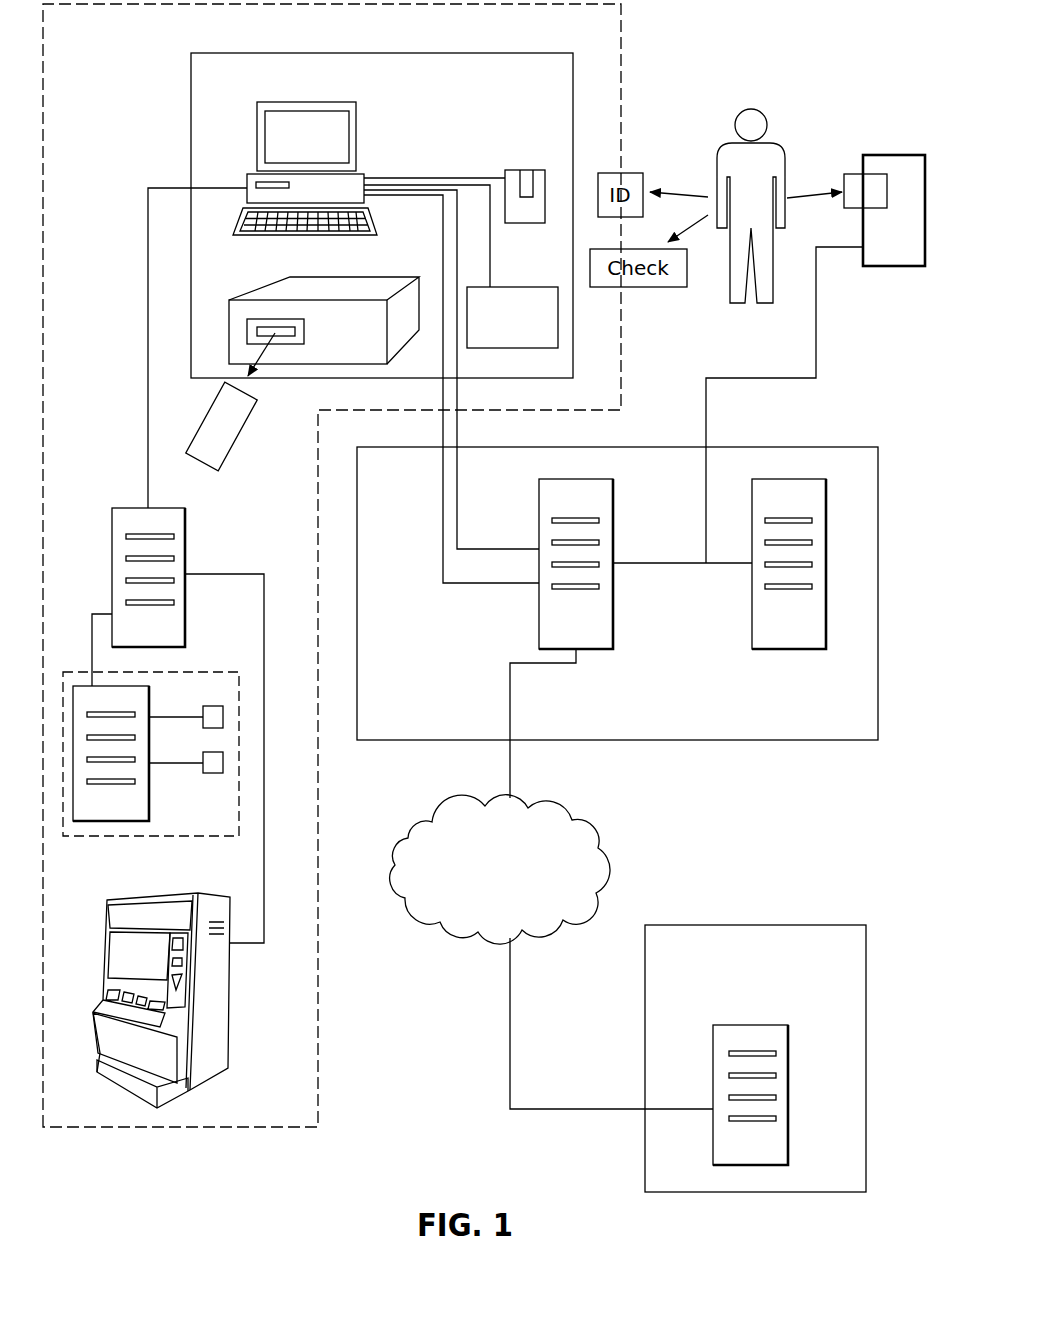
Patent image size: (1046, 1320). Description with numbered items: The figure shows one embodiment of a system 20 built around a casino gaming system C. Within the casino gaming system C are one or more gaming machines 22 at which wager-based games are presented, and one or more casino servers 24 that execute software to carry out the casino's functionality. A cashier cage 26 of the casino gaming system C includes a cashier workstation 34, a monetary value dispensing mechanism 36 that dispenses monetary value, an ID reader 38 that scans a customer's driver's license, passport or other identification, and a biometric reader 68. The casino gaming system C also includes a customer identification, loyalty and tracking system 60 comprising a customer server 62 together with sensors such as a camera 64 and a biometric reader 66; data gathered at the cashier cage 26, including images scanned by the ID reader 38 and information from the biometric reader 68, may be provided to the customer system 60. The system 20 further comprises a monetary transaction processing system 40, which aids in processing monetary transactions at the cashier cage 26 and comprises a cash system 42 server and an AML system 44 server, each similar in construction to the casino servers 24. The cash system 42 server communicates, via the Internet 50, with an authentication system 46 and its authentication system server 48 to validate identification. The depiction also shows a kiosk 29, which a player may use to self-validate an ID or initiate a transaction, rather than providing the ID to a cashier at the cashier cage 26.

The system 20 is at (760, 98).
The gaming machine 22 is at (230, 1022).
The casino server 24 is at (185, 535).
The cashier cage 26 is at (400, 53).
The kiosk 29 is at (892, 145).
The cashier workstation 34 is at (362, 173).
The monetary value dispensing mechanism 36 is at (400, 285).
The ID reader 38 is at (512, 170).
The monetary transaction processing system 40 is at (903, 505).
The cash system 42 is at (615, 509).
The AML system 44 is at (828, 500).
The authentication system 46 is at (822, 925).
The authentication system server 48 is at (789, 1053).
The Internet 50 is at (557, 807).
The customer system 60 is at (143, 837).
The customer server 62 is at (98, 821).
The camera 64 is at (219, 709).
The biometric reader 66 is at (213, 768).
The biometric reader 68 is at (517, 287).
The casino gaming system C is at (185, 1130).